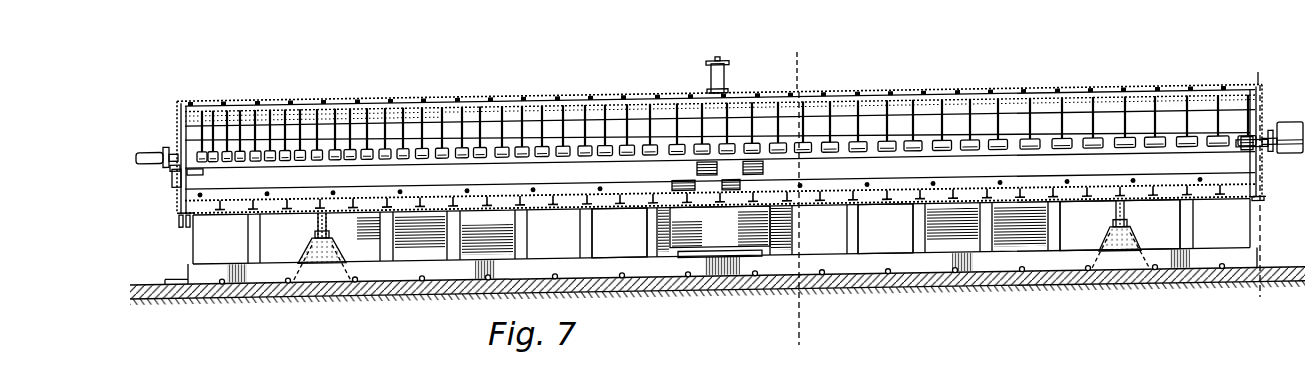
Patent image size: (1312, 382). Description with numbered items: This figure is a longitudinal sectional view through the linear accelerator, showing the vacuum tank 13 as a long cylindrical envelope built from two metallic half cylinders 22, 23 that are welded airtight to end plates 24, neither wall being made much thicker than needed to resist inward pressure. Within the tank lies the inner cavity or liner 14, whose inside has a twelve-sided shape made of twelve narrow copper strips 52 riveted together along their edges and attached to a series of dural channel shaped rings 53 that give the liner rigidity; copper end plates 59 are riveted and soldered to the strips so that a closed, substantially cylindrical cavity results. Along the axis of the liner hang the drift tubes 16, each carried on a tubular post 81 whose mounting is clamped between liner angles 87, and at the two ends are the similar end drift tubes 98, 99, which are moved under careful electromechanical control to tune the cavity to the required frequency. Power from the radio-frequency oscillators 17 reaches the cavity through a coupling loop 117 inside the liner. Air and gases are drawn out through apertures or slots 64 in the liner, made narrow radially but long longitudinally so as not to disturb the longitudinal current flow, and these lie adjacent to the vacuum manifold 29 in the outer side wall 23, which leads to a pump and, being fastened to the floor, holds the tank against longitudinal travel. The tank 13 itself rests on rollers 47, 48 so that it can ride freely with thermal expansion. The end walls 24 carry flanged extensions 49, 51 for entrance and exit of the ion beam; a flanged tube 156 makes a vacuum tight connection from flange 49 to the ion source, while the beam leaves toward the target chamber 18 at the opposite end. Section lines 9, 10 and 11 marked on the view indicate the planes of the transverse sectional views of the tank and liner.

The section line 9- 9 is at (797, 52).
The section line 10- 10 is at (1258, 72).
The frame / section line 11- 11 is at (202, 104).
The vacuum tank 13 is at (328, 98).
The inner cavity 14 is at (928, 112).
The drift tubes 16 is at (565, 166).
The radio-frequency oscillators 17 is at (225, 248).
The target chamber 18 is at (1288, 146).
The metallic half cylinder 22 is at (1167, 106).
The metallic half cylinder 23 is at (1101, 220).
The end plates 24 is at (176, 121).
The vacuum manifold 29 is at (673, 233).
The roller 47 is at (316, 245).
The roller 48 is at (1130, 247).
The flanged extension 49 is at (174, 174).
The flanged extension 51 is at (1270, 176).
The copper strips 52 is at (1069, 124).
The dural channel shaped rings 53 is at (886, 212).
The copper end plates 59 is at (178, 203).
The apertures or slots 64 is at (731, 188).
The tubular post 81 is at (497, 125).
The liner angles 87 is at (625, 108).
The end drift tube 98 is at (203, 175).
The end drift tube 99 is at (1243, 168).
The coupling loop 117 is at (406, 194).
The flanged tube 156 is at (150, 155).